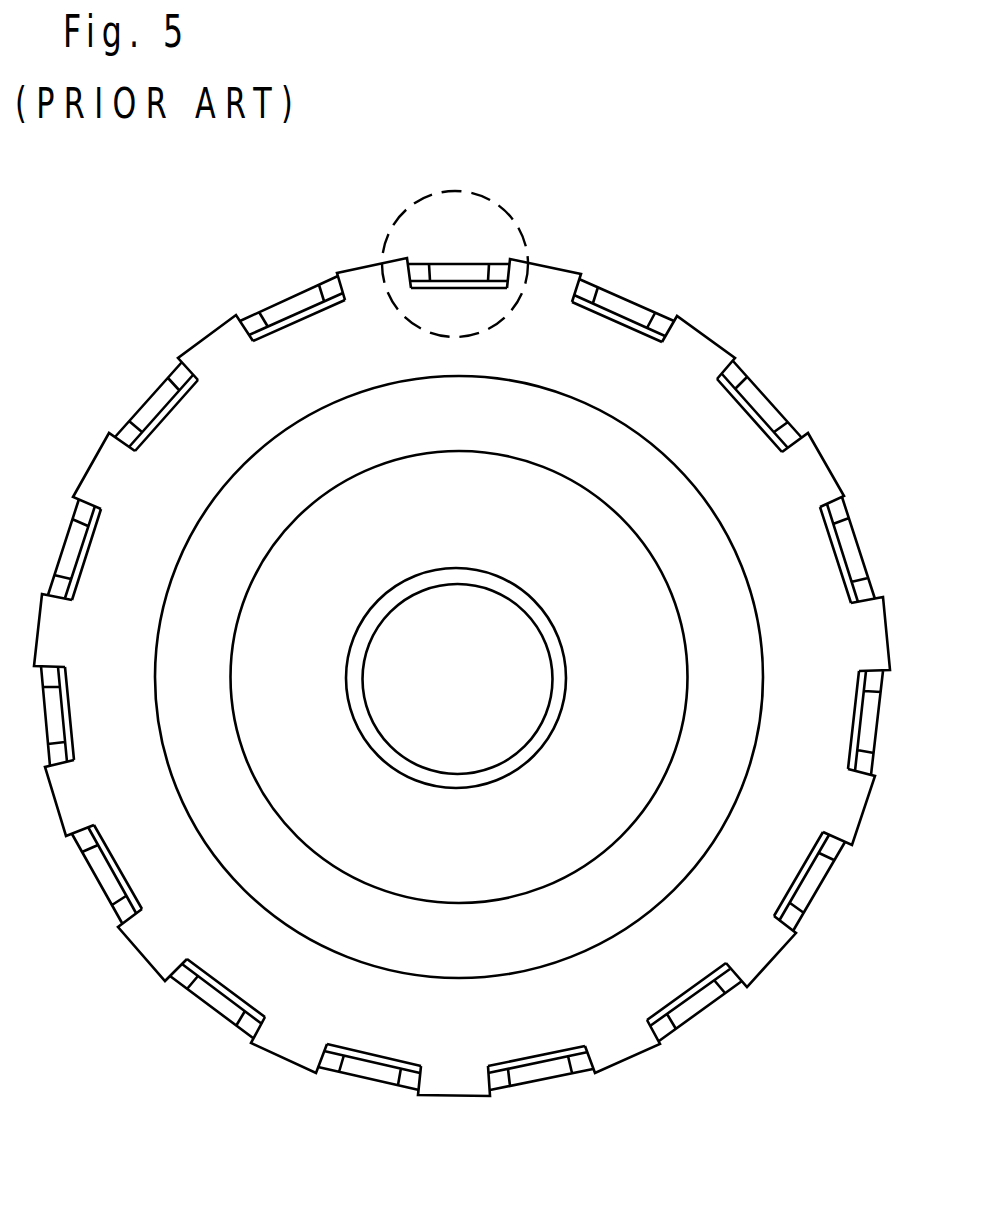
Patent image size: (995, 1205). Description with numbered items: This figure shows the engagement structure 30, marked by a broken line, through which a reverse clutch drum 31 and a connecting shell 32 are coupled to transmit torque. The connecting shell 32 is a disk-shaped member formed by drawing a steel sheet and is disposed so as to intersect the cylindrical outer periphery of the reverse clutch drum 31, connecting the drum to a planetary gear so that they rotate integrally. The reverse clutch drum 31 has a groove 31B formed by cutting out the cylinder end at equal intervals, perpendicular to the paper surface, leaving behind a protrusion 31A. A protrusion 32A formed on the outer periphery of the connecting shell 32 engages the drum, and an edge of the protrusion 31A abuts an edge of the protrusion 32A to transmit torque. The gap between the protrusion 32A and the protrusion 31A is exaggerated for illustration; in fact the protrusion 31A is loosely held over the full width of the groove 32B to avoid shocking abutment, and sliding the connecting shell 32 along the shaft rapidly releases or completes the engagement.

The engagement structure 30 is at (523, 228).
The reverse clutch drum 31 is at (638, 297).
The protrusion 31A is at (466, 273).
The groove 31B is at (353, 287).
The connecting shell 32 is at (715, 333).
The protrusion 32A is at (308, 250).
The groove 32B is at (400, 250).